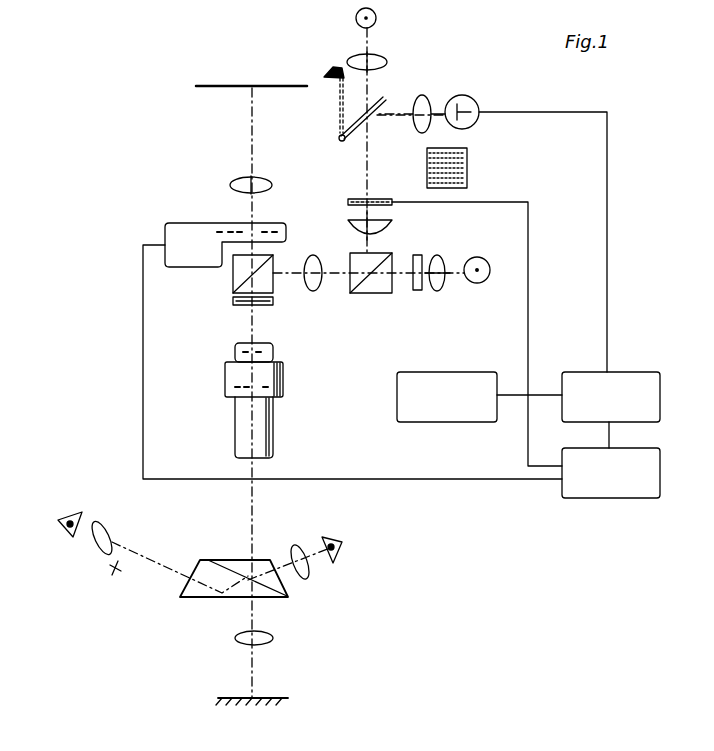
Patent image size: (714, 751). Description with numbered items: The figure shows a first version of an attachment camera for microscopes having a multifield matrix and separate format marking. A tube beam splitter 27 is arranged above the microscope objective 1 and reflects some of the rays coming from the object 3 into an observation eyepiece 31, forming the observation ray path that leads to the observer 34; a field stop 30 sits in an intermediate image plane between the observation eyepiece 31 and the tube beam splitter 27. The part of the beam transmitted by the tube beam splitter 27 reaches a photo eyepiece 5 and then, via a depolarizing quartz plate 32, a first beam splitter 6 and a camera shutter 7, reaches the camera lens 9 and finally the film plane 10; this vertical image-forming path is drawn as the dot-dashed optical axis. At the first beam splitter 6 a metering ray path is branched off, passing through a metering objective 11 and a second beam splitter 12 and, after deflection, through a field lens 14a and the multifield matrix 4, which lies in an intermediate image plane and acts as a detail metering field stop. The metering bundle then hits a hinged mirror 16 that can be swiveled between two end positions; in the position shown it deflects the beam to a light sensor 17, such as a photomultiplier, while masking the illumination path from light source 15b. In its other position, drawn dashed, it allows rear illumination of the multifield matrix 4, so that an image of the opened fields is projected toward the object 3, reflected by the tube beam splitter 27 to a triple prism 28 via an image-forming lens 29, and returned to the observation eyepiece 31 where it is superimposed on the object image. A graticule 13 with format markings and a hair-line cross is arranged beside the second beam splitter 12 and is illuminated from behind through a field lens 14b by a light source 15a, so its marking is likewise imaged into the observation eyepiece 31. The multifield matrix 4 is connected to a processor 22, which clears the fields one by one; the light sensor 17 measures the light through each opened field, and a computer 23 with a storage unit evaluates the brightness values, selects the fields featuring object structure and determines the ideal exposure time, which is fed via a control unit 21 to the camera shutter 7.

The microscope objective 1 is at (270, 633).
The object 3 is at (253, 697).
The multifield matrix 4 is at (427, 160).
The photo eyepiece 5 is at (233, 376).
The first beam splitter 6 is at (237, 277).
The camera shutter 7 is at (195, 231).
The camera lens 9 is at (242, 179).
The film plane 10 is at (215, 93).
The metering objective 11 is at (318, 288).
The second beam splitter 12 is at (373, 293).
The graticule 13 is at (417, 290).
The field lens 14a is at (392, 225).
The field lens 14b is at (443, 283).
The light source 15a is at (478, 257).
The light source 15b is at (376, 18).
The hinged mirror 16 is at (350, 116).
The light sensor 17 is at (465, 97).
The control unit 21 is at (619, 483).
The processor 22 is at (455, 407).
The computer 23 is at (619, 407).
The tube beam splitter 27 is at (194, 597).
The triple prism 28 is at (333, 535).
The image-forming lens 29 is at (307, 572).
The field stop 30 is at (118, 573).
The observation eyepiece 31 is at (85, 557).
The depolarizing quartz plate 32 is at (235, 302).
The observer 34 is at (65, 510).